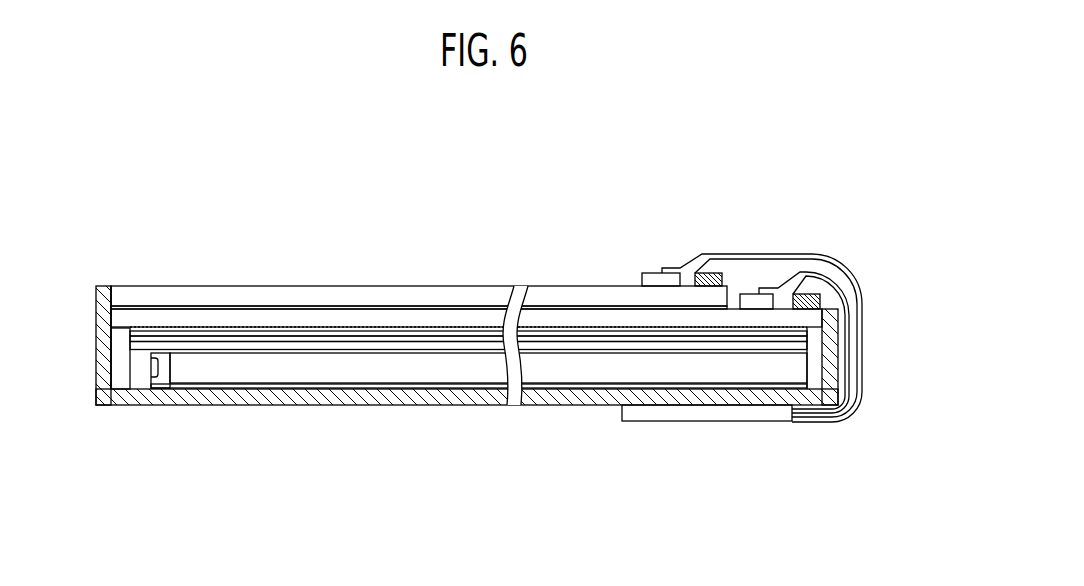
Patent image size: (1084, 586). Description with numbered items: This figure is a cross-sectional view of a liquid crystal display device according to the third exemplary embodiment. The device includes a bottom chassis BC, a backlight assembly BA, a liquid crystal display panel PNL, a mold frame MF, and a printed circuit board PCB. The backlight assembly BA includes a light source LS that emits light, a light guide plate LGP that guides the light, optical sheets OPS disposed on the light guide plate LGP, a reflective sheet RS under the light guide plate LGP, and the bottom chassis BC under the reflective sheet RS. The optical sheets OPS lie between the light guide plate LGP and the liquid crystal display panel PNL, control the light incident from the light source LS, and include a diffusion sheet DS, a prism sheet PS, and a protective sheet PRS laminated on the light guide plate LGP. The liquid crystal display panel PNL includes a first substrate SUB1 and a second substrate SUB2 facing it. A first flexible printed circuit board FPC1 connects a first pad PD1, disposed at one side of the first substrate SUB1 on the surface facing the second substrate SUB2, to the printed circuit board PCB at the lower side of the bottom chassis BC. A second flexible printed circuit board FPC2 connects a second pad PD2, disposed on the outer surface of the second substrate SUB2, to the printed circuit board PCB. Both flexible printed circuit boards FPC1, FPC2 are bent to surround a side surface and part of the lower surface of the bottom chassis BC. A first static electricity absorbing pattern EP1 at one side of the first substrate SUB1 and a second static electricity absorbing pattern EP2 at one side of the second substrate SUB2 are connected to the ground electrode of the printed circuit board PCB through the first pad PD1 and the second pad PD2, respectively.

The liquid crystal display panel PNL is at (466, 254).
The first substrate SUB1 is at (270, 222).
The second substrate SUB2 is at (287, 293).
The first pad PD1 is at (750, 294).
The second pad PD2 is at (653, 273).
The first static electricity absorbing pattern EP1 is at (810, 294).
The second static electricity absorbing pattern EP2 is at (703, 273).
The first flexible printed circuit board FPC1 is at (849, 355).
The second flexible printed circuit board FPC2 is at (862, 324).
The mold frame MF is at (120, 383).
The light source LS is at (141, 383).
The light guide plate LGP is at (208, 375).
The reflective sheet RS is at (479, 429).
The protective sheet PRS is at (306, 332).
The prism sheet PS is at (345, 345).
The diffusion sheet DS is at (385, 350).
The optical sheets OPS is at (468, 418).
The bottom chassis BC is at (480, 388).
The printed circuit board PCB is at (702, 415).
The backlight assembly BA is at (468, 439).